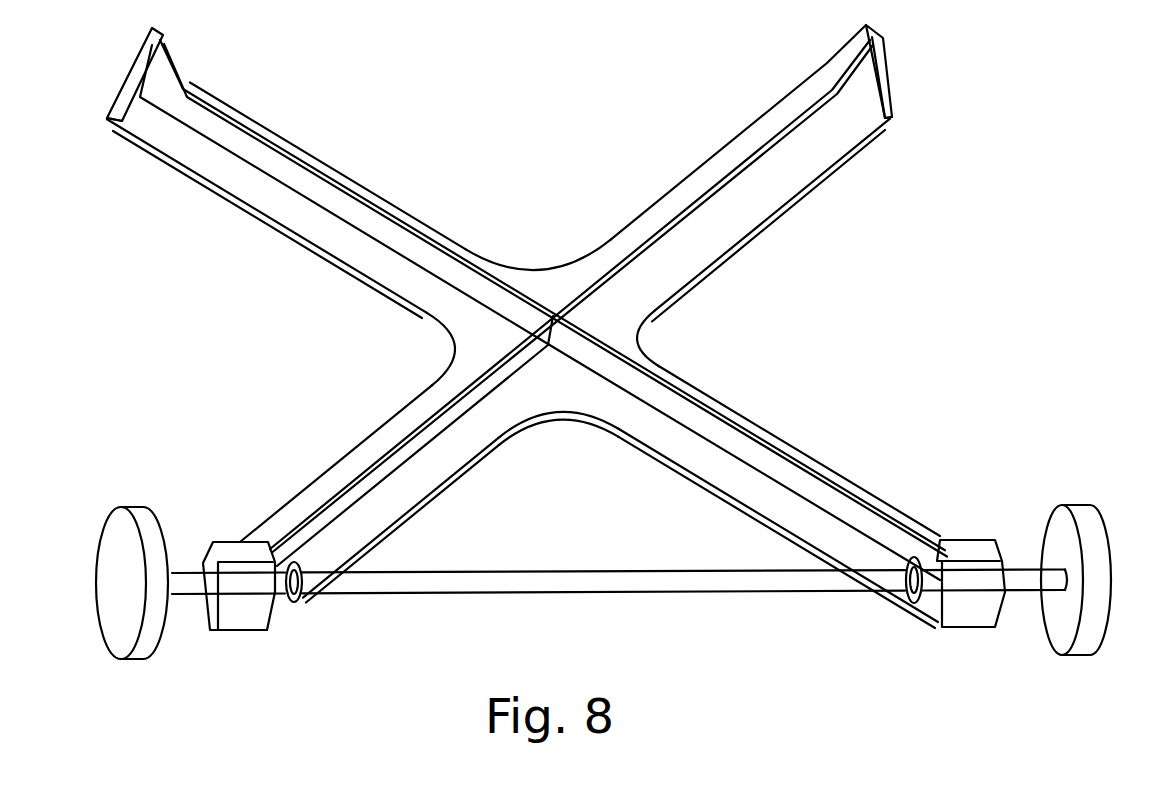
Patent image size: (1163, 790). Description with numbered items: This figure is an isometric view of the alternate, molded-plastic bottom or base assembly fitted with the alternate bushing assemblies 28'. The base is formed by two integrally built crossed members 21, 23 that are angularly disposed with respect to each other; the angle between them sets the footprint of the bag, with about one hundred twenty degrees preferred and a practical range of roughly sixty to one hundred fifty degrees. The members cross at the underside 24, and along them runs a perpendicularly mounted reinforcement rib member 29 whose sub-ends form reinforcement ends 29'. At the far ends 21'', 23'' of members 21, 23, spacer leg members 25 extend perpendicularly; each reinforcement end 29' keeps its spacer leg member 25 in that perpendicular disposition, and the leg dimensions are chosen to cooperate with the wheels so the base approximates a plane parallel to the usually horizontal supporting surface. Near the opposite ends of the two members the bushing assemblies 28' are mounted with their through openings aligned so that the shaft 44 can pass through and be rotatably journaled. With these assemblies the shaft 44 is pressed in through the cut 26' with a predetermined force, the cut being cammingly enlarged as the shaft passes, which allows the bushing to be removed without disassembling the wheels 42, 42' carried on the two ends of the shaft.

The crossed member 21 is at (504, 334).
The end of member 21 21'' is at (92, 159).
The crossed member 23 is at (631, 314).
The end of member 23 23'' is at (953, 146).
The underside 24 is at (562, 402).
The spacer leg member 25 is at (112, 98).
The cut 26' is at (975, 540).
The bushing assembly 28' is at (608, 584).
The reinforcement rib member 29 is at (556, 289).
The reinforcement end 29' is at (552, 298).
The wheel 42 is at (114, 546).
The wheel 42' is at (1097, 544).
The shaft 44 is at (811, 600).